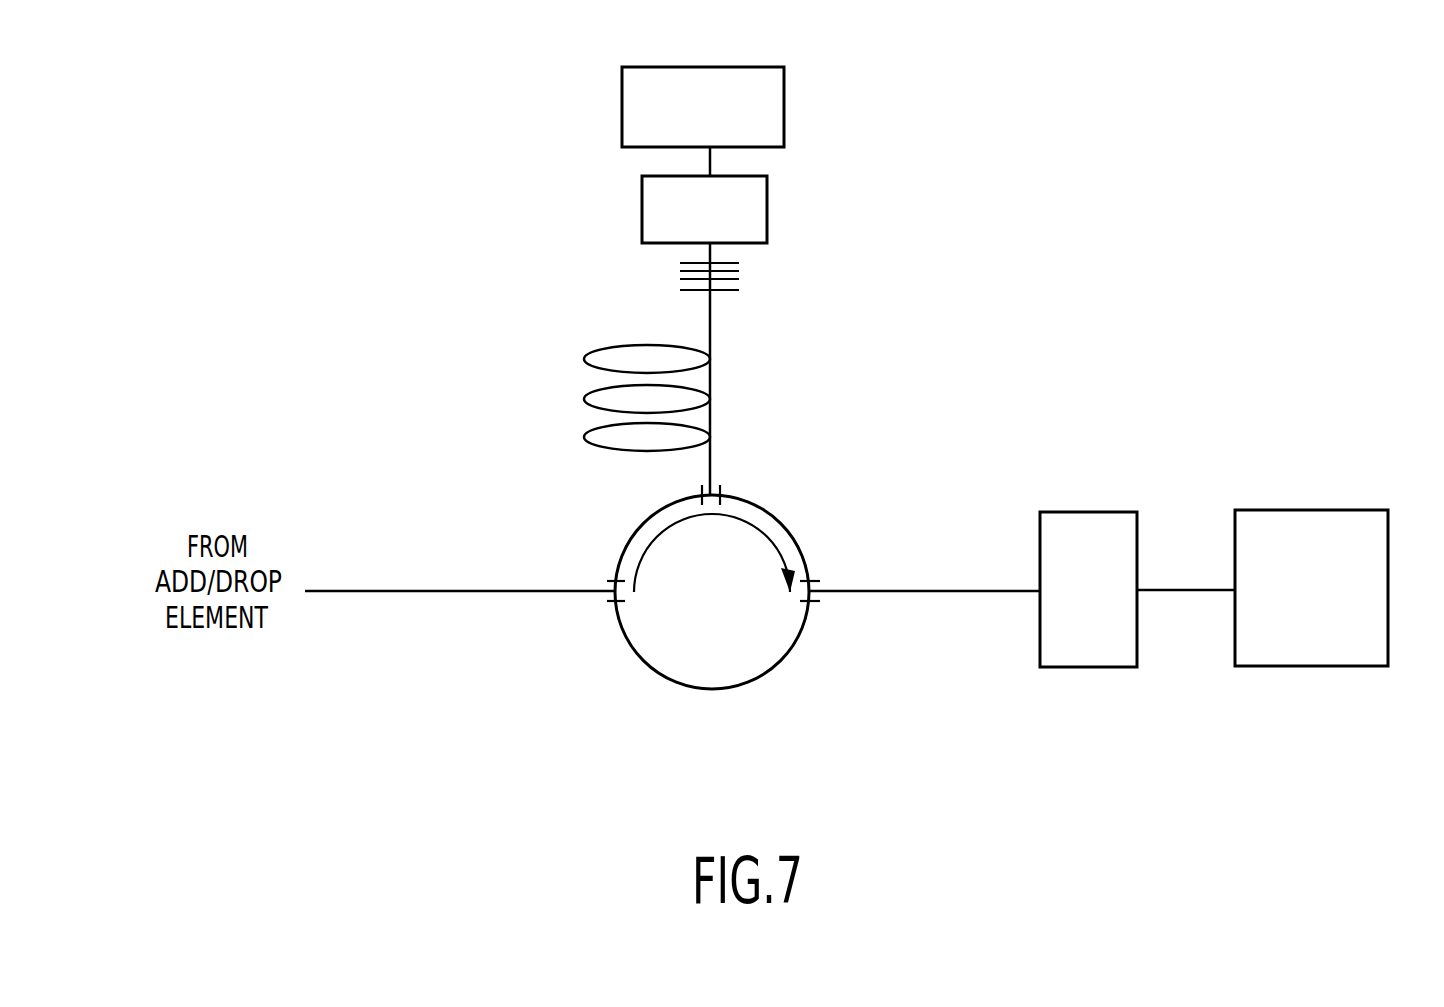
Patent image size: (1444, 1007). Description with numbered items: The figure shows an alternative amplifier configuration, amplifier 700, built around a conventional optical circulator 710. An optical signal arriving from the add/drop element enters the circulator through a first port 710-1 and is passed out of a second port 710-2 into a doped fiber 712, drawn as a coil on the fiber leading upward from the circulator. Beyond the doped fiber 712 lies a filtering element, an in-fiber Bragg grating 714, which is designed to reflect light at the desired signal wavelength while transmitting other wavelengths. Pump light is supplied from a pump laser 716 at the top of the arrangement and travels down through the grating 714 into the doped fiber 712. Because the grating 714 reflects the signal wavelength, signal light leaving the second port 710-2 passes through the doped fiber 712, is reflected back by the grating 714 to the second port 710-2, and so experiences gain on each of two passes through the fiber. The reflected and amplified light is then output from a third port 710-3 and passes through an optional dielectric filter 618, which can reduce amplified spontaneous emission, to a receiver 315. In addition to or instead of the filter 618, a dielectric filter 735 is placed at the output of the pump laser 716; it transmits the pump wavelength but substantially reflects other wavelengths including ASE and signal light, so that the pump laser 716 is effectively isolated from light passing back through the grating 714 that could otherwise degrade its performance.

The pump laser 716 is at (622, 109).
The dielectric filter 735 is at (642, 215).
The in-fiber Bragg grating 714 is at (753, 278).
The doped fiber 712 is at (718, 377).
The optical circulator 710 is at (730, 587).
The first port 710-1 is at (615, 602).
The second port 710-2 is at (720, 493).
The third port 710-3 is at (810, 602).
The dielectric filter 618 is at (1095, 510).
The receiver 315 is at (1328, 510).
The amplifier 700 is at (1158, 795).